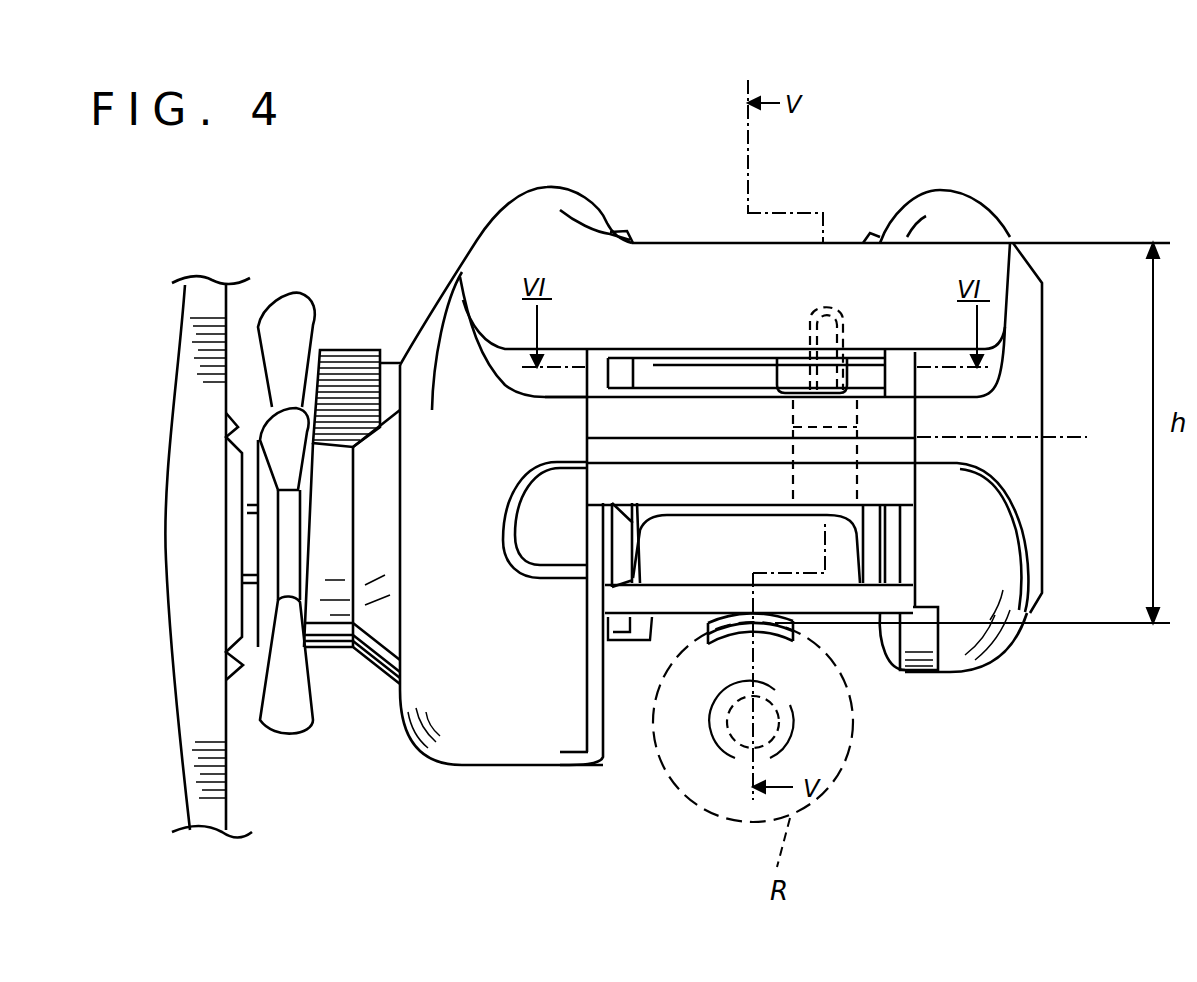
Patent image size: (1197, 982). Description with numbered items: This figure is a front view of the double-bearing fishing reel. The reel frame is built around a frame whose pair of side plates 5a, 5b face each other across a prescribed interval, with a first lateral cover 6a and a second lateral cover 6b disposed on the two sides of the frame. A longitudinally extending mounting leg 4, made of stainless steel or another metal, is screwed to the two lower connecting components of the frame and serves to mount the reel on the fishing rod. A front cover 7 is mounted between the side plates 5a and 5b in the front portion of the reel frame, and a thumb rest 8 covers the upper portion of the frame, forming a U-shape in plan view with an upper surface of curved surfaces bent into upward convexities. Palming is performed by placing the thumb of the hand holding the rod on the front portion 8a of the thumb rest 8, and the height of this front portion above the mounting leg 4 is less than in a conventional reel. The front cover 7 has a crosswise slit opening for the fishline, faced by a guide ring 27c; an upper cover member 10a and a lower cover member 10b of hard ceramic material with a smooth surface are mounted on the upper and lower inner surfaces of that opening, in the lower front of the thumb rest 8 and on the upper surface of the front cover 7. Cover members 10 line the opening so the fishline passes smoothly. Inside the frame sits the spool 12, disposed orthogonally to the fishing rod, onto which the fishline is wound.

The mounting leg 4 is at (707, 632).
The side plate 5a is at (922, 660).
The side plate 5b is at (600, 755).
The first lateral cover 6a is at (1032, 350).
The second lateral cover 6b is at (422, 350).
The front cover 7 is at (900, 427).
The thumb rest 8 is at (963, 183).
The front portion of the thumb rest 8a is at (795, 243).
The fixing member 10 is at (850, 607).
The upper cover member 10a is at (723, 353).
The lower cover member 10b is at (777, 357).
The spool 12 is at (648, 523).
The guide ring 27c is at (833, 297).